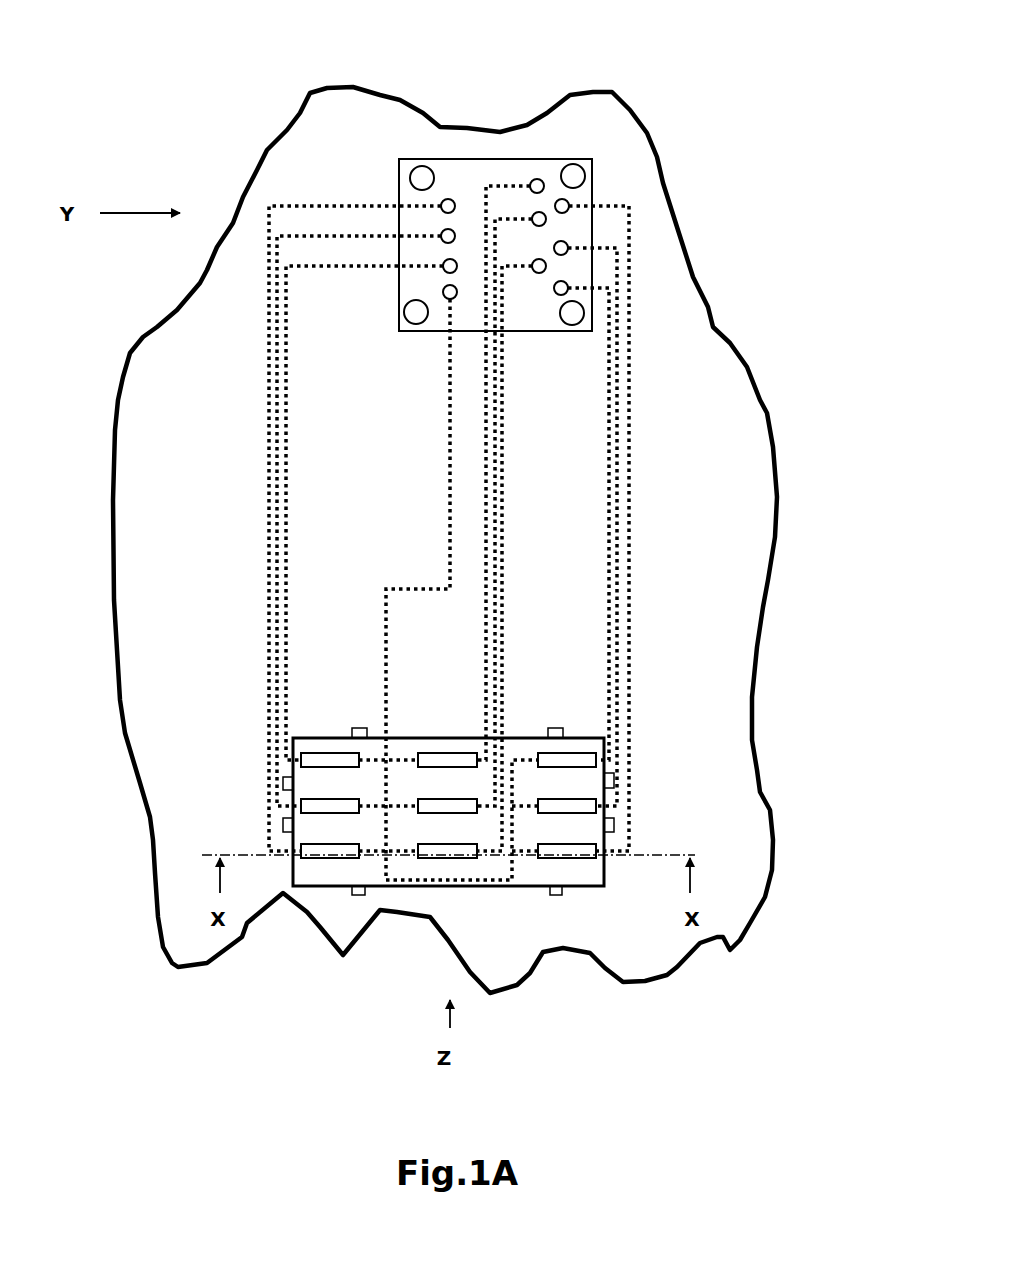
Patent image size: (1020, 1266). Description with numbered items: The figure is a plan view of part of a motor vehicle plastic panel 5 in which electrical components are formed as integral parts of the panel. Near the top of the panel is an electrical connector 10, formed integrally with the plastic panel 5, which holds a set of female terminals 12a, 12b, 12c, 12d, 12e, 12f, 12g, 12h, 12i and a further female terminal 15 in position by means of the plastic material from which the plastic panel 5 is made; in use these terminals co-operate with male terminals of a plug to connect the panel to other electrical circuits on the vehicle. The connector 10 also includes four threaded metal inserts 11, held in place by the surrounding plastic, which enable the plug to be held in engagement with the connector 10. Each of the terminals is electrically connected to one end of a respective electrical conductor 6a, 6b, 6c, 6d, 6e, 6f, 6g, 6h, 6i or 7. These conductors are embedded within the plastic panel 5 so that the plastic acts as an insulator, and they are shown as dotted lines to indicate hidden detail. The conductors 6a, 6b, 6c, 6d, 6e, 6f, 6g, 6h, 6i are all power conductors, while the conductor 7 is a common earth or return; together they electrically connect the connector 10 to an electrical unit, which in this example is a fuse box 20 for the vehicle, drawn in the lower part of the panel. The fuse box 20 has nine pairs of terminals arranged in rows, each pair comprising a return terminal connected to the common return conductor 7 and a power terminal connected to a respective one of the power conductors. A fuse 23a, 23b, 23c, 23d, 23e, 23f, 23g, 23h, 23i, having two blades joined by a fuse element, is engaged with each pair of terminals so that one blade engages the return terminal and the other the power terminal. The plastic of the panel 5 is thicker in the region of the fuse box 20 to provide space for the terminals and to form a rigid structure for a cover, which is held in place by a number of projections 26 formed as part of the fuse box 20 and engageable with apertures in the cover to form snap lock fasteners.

The plastic panel 5 is at (122, 365).
The electrical connector 10 is at (398, 185).
The threaded metal inserts 11 is at (418, 167).
The female terminal 12a is at (450, 199).
The female terminal 12b is at (442, 238).
The female terminal 12c is at (445, 271).
The female terminal 12d is at (538, 179).
The female terminal 12e is at (534, 225).
The female terminal 12f is at (534, 272).
The female terminal 12g is at (555, 293).
The female terminal 12h is at (563, 255).
The female terminal 12i is at (570, 205).
The female terminal 15 is at (445, 305).
The electrical conductor 6a is at (269, 345).
The electrical conductor 6b is at (277, 400).
The electrical conductor 6c is at (286, 447).
The electrical conductor 6d is at (485, 400).
The electrical conductor 6e is at (497, 448).
The electrical conductor 6f is at (503, 515).
The electrical conductor 6g is at (609, 402).
The electrical conductor 6h is at (617, 487).
The electrical conductor 6i is at (629, 532).
The common return conductor 7 is at (448, 473).
The fuse box 20 is at (440, 736).
The fuse 23a is at (328, 860).
The fuse 23b is at (330, 806).
The fuse 23c is at (330, 760).
The fuse 23d is at (447, 760).
The fuse 23e is at (447, 806).
The fuse 23f is at (445, 860).
The fuse 23g is at (567, 760).
The fuse 23h is at (567, 806).
The fuse 23i is at (580, 860).
The projections 26 is at (283, 825).